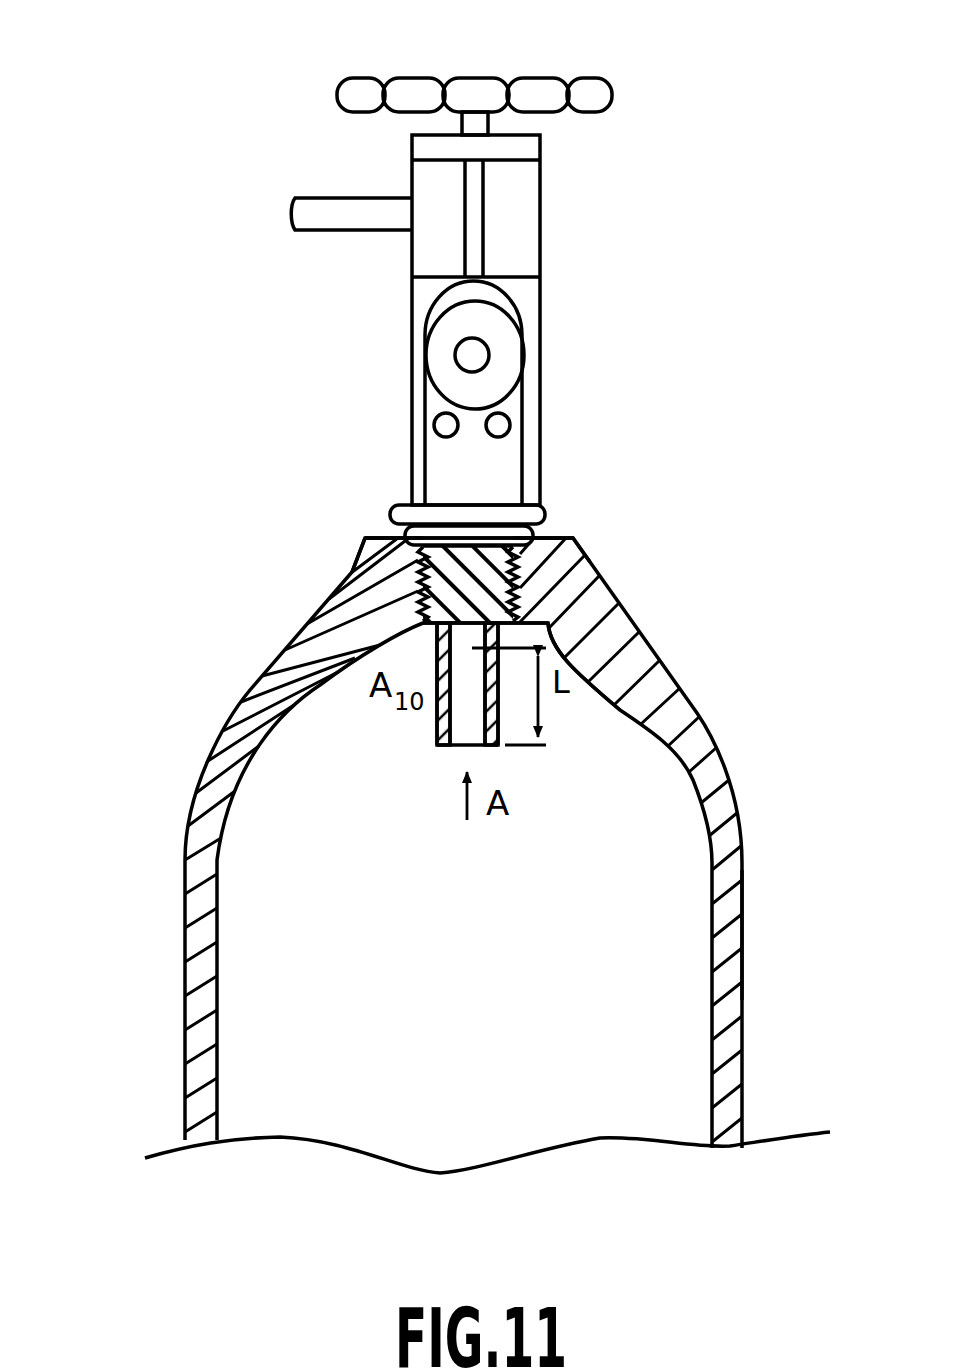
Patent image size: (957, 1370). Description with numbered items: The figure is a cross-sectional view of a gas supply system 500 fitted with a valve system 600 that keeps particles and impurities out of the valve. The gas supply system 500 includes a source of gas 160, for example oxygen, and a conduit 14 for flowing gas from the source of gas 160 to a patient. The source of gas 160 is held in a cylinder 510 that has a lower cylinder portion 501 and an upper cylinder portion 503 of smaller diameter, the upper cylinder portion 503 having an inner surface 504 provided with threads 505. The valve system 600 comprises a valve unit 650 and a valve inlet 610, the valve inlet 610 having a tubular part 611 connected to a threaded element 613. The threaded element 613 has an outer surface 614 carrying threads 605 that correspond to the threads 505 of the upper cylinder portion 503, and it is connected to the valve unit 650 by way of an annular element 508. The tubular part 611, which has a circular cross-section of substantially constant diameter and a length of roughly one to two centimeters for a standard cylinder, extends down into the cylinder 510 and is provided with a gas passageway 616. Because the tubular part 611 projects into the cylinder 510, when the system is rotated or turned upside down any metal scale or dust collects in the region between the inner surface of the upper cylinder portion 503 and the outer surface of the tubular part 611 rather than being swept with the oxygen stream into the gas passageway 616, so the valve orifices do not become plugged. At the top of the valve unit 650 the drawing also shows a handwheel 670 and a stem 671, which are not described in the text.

The gas supply system 500 is at (160, 302).
The conduit 14 is at (353, 232).
The valve system 600 is at (554, 340).
The handwheel 670 is at (587, 95).
The valve stem 671 is at (495, 123).
The valve unit 650 is at (503, 455).
The annular element 508 is at (545, 514).
The threads 505 is at (585, 558).
The upper cylinder portion 503 is at (565, 582).
The inner surface 504 is at (565, 613).
The threaded element 613 is at (465, 578).
The threads 605 is at (423, 572).
The outer surface 614 is at (440, 631).
The gas passageway 616 is at (452, 720).
The tubular part 611 is at (550, 647).
The valve inlet 610 is at (653, 727).
The cylinder 510 is at (724, 822).
The source of gas 160 is at (672, 938).
The lower cylinder portion 501 is at (725, 1074).